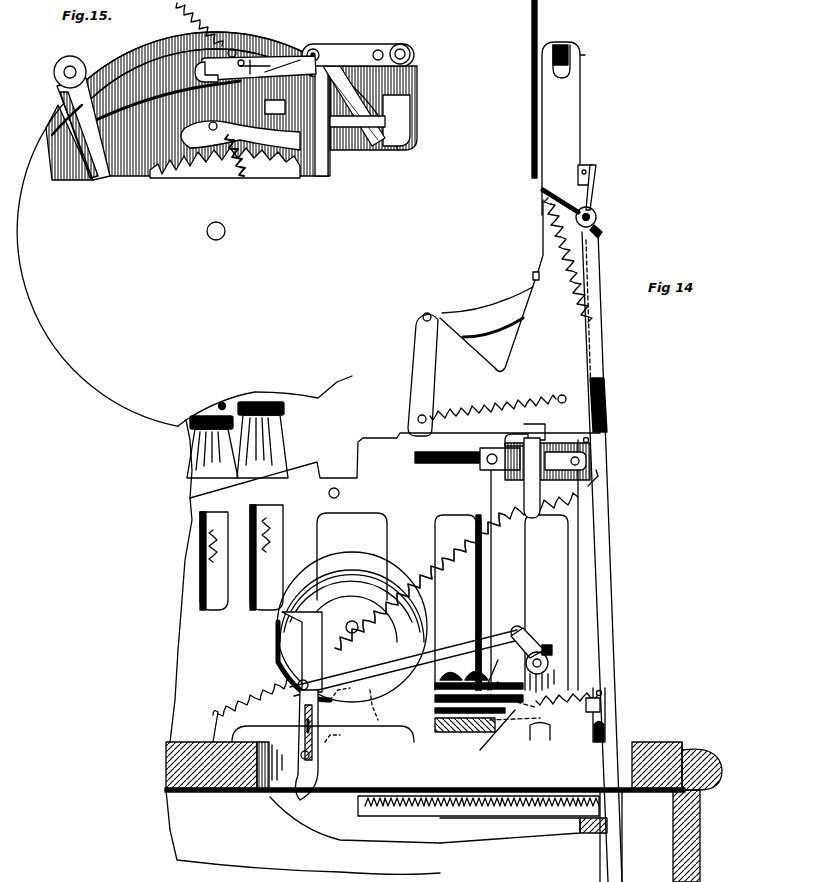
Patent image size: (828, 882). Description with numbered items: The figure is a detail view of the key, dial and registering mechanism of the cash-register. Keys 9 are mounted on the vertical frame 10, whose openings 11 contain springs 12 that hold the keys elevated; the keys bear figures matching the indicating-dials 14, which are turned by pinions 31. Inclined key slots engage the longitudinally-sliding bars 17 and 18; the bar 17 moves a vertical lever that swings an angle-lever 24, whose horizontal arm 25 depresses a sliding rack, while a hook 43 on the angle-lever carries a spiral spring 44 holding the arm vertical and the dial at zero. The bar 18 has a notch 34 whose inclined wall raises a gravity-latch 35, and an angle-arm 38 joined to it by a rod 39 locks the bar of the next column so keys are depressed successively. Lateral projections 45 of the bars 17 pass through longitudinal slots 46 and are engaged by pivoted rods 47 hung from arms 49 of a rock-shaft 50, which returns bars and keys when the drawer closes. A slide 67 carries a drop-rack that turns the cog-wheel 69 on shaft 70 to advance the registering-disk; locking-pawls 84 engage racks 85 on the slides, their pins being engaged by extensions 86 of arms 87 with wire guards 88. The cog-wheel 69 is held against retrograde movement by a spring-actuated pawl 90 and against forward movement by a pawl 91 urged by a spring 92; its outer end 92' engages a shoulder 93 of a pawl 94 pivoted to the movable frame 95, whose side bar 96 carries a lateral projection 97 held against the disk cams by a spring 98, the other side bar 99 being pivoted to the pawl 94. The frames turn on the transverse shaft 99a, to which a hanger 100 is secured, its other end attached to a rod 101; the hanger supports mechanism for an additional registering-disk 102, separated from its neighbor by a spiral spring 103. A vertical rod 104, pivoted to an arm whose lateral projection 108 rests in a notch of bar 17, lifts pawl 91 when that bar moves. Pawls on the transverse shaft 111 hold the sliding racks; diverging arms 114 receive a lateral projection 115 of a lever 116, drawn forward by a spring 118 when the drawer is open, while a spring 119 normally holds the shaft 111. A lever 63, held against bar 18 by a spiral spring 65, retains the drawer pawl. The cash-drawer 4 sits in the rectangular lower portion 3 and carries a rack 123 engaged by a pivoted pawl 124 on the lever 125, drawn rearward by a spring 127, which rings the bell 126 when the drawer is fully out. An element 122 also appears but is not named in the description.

In FIG. 15, the additional registering-disk 102 is at (398, 202).
In FIG. 15, the hanger 100 is at (417, 102).
In FIG. 15, the pawl 94 is at (322, 176).
In FIG. 15, the shoulder or projection 93 is at (345, 100).
In FIG. 15, the outer end 92' is at (392, 125).
In FIG. 15, the side bar 99 is at (340, 48).
In FIG. 15, the transverse shaft 99a is at (410, 50).
In FIG. 14, the transverse shaft 99a is at (424, 318).
In FIG. 15, the lateral projection 97 is at (255, 58).
In FIG. 15, the side bar 96 is at (296, 60).
In FIG. 15, the spring 98 is at (200, 14).
In FIG. 15, the spiral spring 103 is at (215, 80).
In FIG. 15, the movable frame 95 is at (281, 104).
In FIG. 15, the pawl 91 is at (190, 140).
In FIG. 15, the cog-wheel 69 is at (203, 164).
In FIG. 15, the spring 92 is at (233, 169).
In FIG. 15, the rod 101 is at (54, 71).
In FIG. 15, the spring-actuated pawl 90 is at (85, 135).
In FIG. 15, the shaft 70 is at (225, 231).
In FIG. 14, the indicating-dials 14 is at (532, 104).
In FIG. 14, the rod 39 is at (572, 70).
In FIG. 14, the pinions 31 is at (562, 44).
In FIG. 14, the lateral projection 115 is at (590, 165).
In FIG. 14, the diverging arms 114 is at (596, 172).
In FIG. 14, the transverse shaft 111 is at (596, 214).
In FIG. 14, the spring 119 is at (547, 243).
In FIG. 14, the lever 116 is at (606, 392).
In FIG. 14, the vertical frame 10 is at (383, 537).
In FIG. 14, the horizontal arm 25 is at (487, 326).
In FIG. 14, the angle-lever 24 is at (413, 392).
In FIG. 14, the lateral projection or hook 43 is at (418, 419).
In FIG. 14, the spiral spring 44 is at (490, 408).
In FIG. 14, the wire guards 88 is at (545, 426).
In FIG. 14, the locking-pawls 84 is at (507, 433).
In FIG. 14, the slide 67 is at (445, 464).
In FIG. 14, the racks 85 is at (505, 460).
In FIG. 14, the arms 87 is at (560, 480).
In FIG. 14, the extensions 86 is at (524, 494).
In FIG. 14, the spring 118 is at (420, 581).
In FIG. 14, the vertical rod 104 is at (486, 582).
In FIG. 14, the keys 9 is at (236, 408).
In FIG. 14, the springs 12 is at (208, 540).
In FIG. 14, the openings 11 is at (250, 597).
In FIG. 14, the bell 126 is at (358, 542).
In FIG. 14, the pivoted rods 47 is at (404, 662).
In FIG. 14, the arms 49 is at (522, 632).
In FIG. 14, the rock-shaft 50 is at (546, 660).
In FIG. 14, the angle-arm 38 is at (455, 680).
In FIG. 14, the lateral projection 108 is at (507, 663).
In FIG. 14, the longitudinally-sliding bar 17 is at (505, 678).
In FIG. 14, the notch 34 is at (520, 725).
In FIG. 14, the gravity-latch 35 is at (506, 735).
In FIG. 14, the spiral spring 65 is at (560, 698).
In FIG. 14, the longitudinally-sliding bar 18 is at (600, 690).
In FIG. 14, the lever 63 is at (600, 706).
In FIG. 14, the lever 125 is at (300, 712).
In FIG. 14, the pivoted pawl 124 is at (318, 772).
In FIG. 14, the lateral projections 45 is at (349, 700).
In FIG. 14, the longitudinal slots 46 is at (382, 705).
In FIG. 14, the spring 127 is at (323, 734).
In FIG. 14, the base block 122 is at (224, 766).
In FIG. 14, the rack 123 is at (478, 806).
In FIG. 14, the rectangular lower portion 3 is at (700, 808).
In FIG. 14, the cash-drawer 4 is at (510, 840).